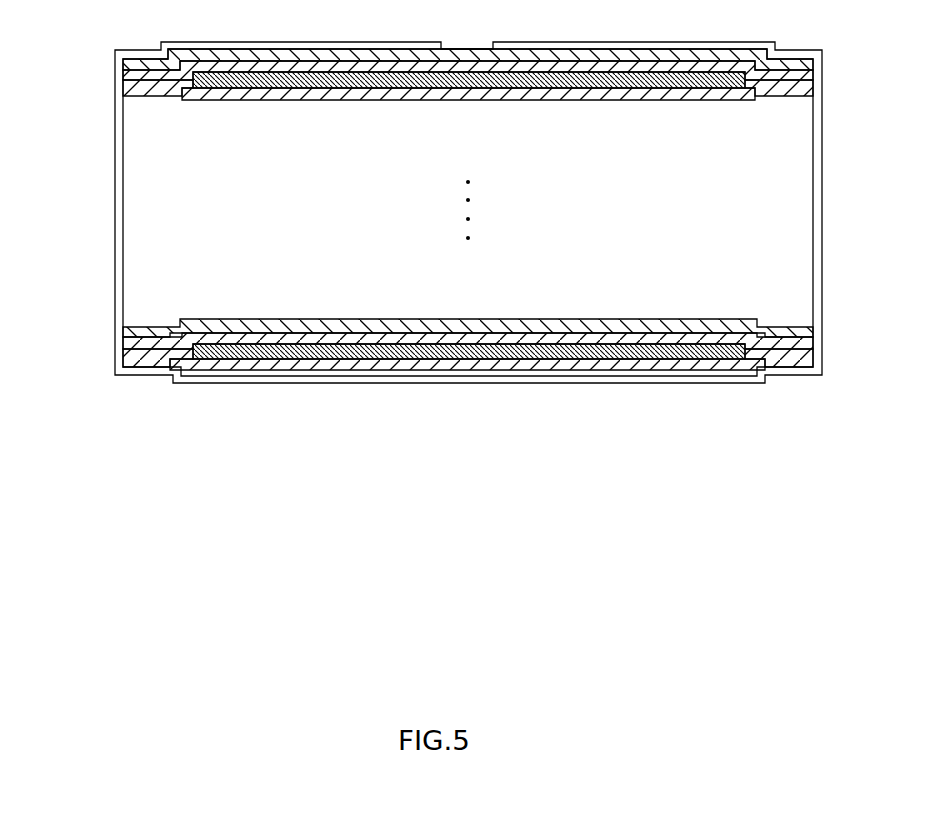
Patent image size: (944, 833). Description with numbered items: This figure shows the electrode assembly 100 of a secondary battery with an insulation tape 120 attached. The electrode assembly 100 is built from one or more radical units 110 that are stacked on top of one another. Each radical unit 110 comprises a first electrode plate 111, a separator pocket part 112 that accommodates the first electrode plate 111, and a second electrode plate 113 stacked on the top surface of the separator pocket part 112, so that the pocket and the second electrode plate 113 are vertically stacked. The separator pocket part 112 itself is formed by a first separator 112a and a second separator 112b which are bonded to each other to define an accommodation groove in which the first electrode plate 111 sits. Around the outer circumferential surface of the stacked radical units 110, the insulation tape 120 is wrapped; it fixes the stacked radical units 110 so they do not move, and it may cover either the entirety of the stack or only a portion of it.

The electrode assembly 100 is at (460, 319).
The radical unit 110 is at (468, 322).
The first electrode plate 111 is at (640, 500).
The separator pocket part 112 is at (468, 282).
The first separator 112a is at (695, 442).
The second separator 112b is at (678, 362).
The second electrode plate 113 is at (268, 324).
The insulation tape 120 is at (118, 212).